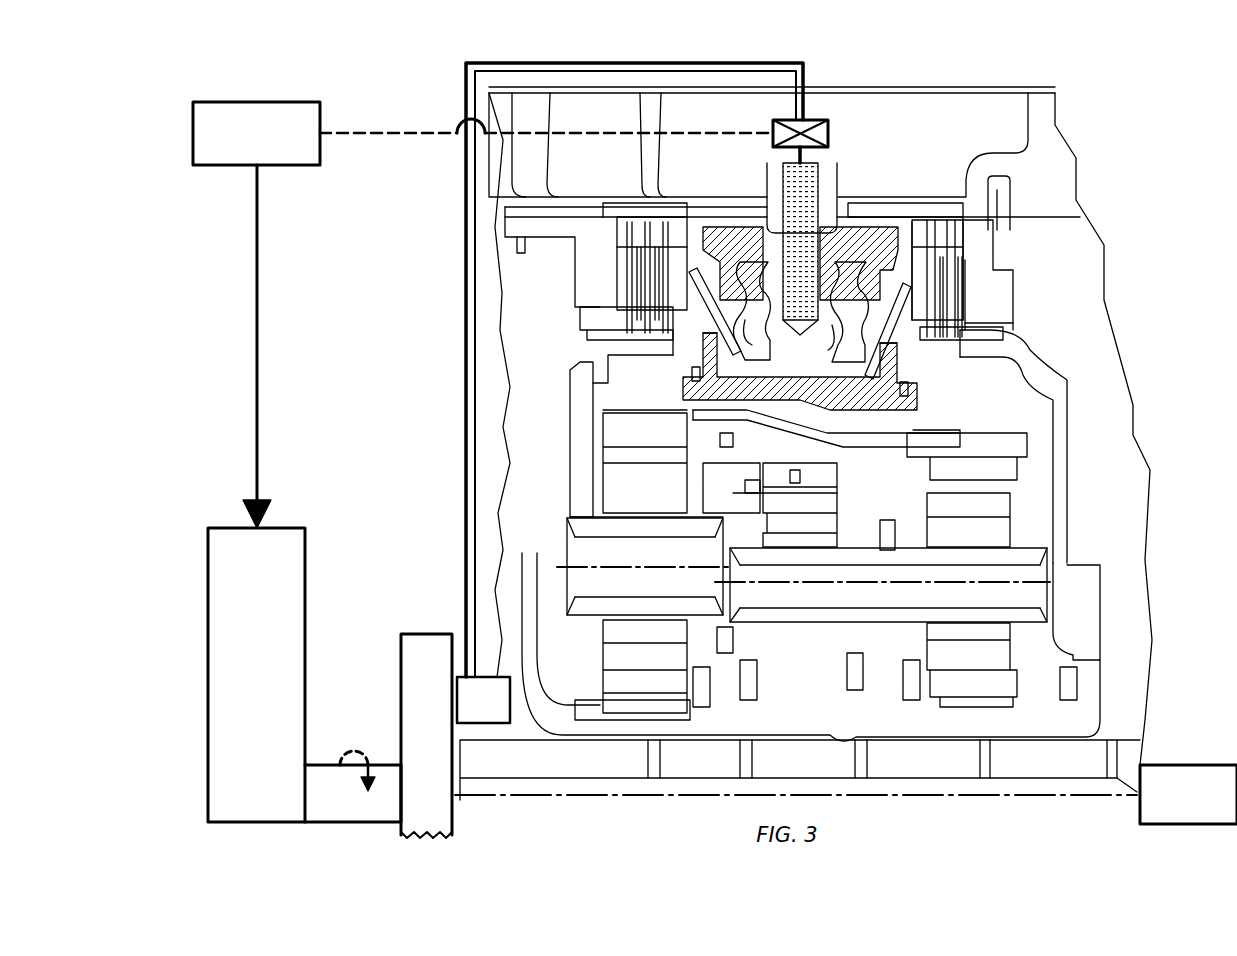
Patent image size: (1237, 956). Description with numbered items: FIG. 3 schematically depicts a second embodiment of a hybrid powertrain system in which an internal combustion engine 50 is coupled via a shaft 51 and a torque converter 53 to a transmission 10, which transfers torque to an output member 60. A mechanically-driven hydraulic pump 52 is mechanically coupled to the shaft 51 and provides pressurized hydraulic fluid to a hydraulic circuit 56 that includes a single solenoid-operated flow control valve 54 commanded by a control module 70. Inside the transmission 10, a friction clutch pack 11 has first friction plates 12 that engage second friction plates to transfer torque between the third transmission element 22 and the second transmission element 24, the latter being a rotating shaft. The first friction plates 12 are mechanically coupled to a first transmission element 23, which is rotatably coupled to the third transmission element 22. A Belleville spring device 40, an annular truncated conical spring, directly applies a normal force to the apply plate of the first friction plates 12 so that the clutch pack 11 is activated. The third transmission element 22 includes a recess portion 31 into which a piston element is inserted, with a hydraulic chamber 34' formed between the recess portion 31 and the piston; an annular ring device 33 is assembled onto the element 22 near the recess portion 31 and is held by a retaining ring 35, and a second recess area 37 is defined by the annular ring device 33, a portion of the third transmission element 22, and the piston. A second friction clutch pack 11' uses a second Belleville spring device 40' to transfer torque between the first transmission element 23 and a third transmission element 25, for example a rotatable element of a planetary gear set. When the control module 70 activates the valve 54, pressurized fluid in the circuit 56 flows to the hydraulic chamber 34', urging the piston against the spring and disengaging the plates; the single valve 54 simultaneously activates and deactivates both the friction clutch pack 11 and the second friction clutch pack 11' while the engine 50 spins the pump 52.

The transmission 10 is at (1072, 281).
The friction clutch pack 11 is at (965, 263).
The second friction clutch pack 11' is at (636, 362).
The first friction plate 12 is at (960, 272).
The third transmission element 22 is at (885, 403).
The first transmission element 23 is at (642, 210).
The second transmission element 24 is at (1018, 377).
The third transmission element 25 is at (630, 347).
The recess portion 31 is at (850, 262).
The annular ring device 33 is at (879, 406).
The hydraulic chamber 34' is at (808, 312).
The retaining ring 35 is at (909, 391).
The second recess area 37 is at (861, 398).
The Belleville spring device 40 is at (912, 334).
The second Belleville spring device 40' is at (721, 258).
The internal combustion engine 50 is at (256, 675).
The shaft 51 is at (353, 786).
The mechanically-driven hydraulic pump 52 is at (483, 700).
The torque converter 53 is at (426, 736).
The solenoid-operated flow control valve 54 is at (838, 133).
The hydraulic circuit 56 is at (812, 73).
The output member 60 is at (1188, 794).
The control module 70 is at (482, 315).